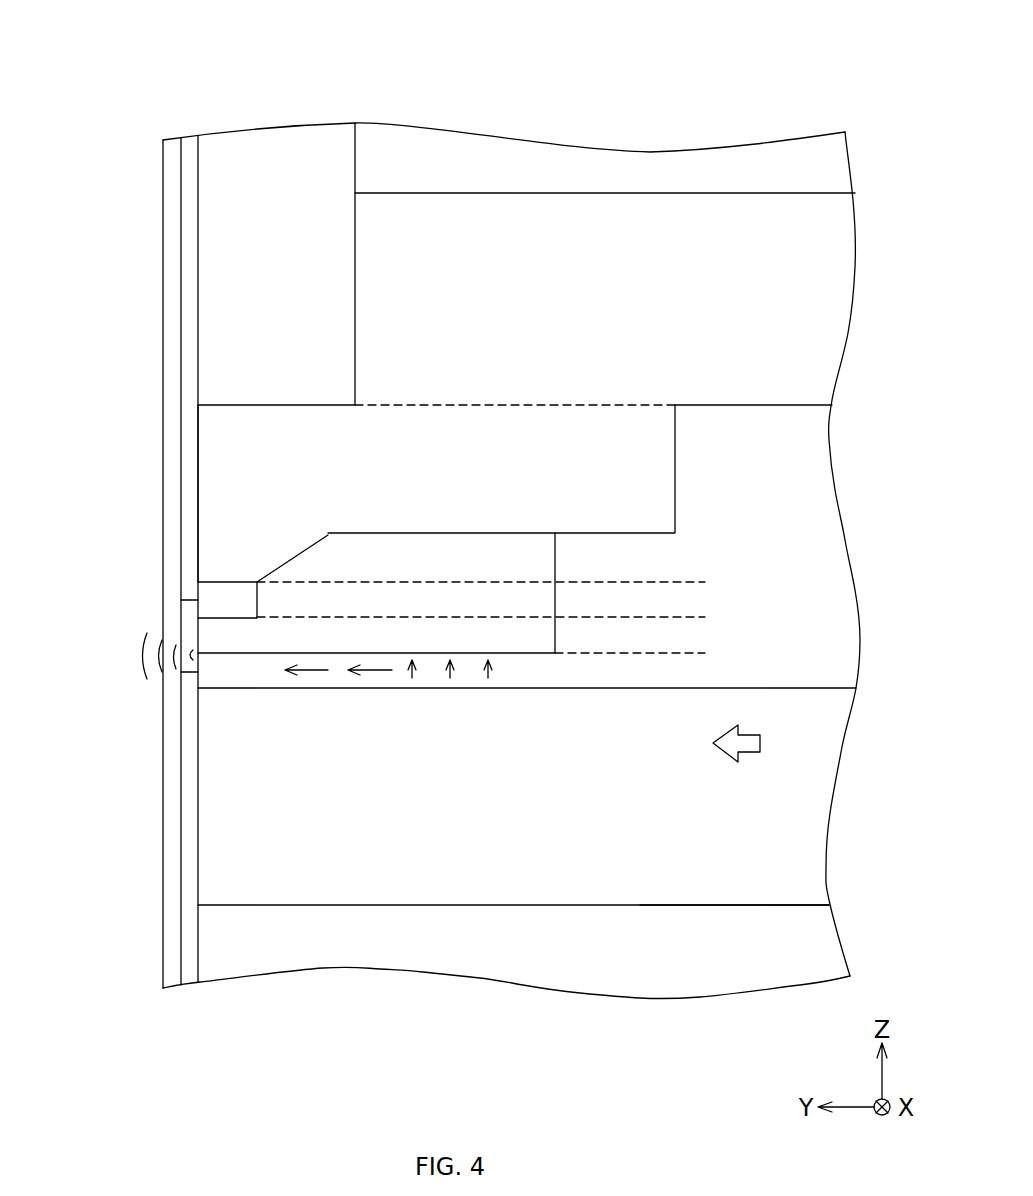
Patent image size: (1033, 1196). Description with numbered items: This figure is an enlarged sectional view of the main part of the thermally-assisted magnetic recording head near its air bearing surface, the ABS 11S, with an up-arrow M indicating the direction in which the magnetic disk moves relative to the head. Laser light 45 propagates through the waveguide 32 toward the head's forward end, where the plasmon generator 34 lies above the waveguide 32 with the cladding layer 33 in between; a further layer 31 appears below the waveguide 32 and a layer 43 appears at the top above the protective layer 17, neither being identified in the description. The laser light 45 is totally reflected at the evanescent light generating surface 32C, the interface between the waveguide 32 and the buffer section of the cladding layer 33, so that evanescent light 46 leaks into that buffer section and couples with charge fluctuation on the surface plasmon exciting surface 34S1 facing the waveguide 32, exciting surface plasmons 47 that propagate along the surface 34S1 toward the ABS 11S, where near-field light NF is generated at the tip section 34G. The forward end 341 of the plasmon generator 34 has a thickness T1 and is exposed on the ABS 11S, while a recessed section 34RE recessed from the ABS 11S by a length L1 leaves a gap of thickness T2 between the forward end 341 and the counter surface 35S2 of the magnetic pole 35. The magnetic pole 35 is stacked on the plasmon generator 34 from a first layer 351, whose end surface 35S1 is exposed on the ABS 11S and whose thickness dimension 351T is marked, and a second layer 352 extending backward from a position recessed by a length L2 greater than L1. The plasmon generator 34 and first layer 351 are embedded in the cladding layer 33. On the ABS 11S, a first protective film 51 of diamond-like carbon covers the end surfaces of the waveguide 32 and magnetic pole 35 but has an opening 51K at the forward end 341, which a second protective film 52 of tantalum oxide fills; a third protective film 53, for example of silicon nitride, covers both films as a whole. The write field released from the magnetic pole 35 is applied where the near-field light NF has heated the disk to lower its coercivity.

The ABS (air bearing surface) 11S is at (188, 940).
The protective layer 17 is at (313, 128).
The base layer 31 is at (732, 987).
The waveguide 32 is at (676, 873).
The evanescent light generating surface 32C is at (846, 673).
The cladding layer 33 is at (845, 598).
The plasmon generator 34 is at (428, 633).
The forward end 341 is at (227, 638).
The tip section 34G is at (190, 667).
The recessed section 34RE is at (193, 594).
The surface plasmon exciting surface 34S1 is at (543, 656).
The magnetic pole 35 is at (695, 63).
The first layer 351 is at (552, 447).
The second layer 352 is at (668, 210).
The thickness of first protrusion portion 351T is at (612, 405).
The end surface of the magnetic pole 35S1 is at (186, 472).
The counter surface 35S2 is at (259, 584).
The holder 43 is at (426, 135).
The laser light 45 is at (762, 742).
The evanescent light 46 is at (488, 678).
The surface plasmons 47 is at (382, 672).
The first protective film 51 is at (190, 790).
The opening 51K is at (178, 612).
The second protective film 52 is at (190, 620).
The third protective film 53 is at (175, 734).
The near-field light NF is at (140, 655).
The up-arrow (disk moving direction) M is at (51, 980).
The length of recess L1 is at (257, 582).
The length of recess of second layer L2 is at (198, 211).
The thickness of forward end T1 is at (702, 617).
The thickness of recessed section T2 is at (702, 582).